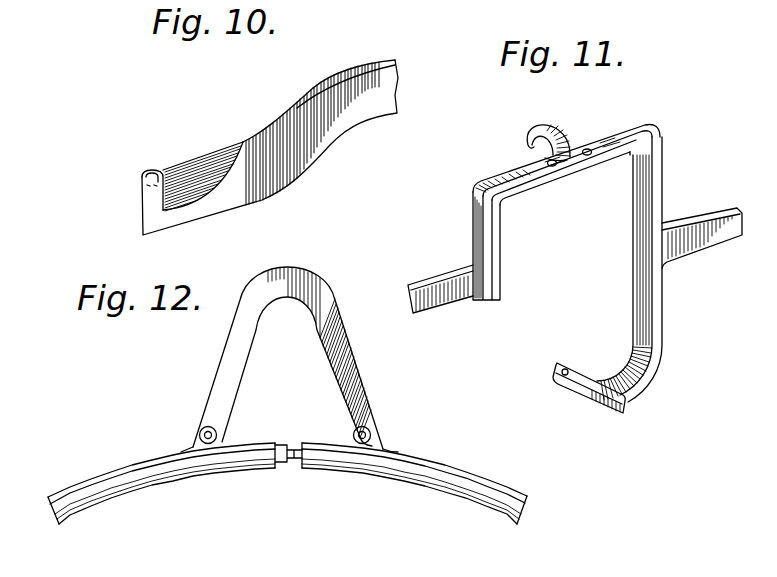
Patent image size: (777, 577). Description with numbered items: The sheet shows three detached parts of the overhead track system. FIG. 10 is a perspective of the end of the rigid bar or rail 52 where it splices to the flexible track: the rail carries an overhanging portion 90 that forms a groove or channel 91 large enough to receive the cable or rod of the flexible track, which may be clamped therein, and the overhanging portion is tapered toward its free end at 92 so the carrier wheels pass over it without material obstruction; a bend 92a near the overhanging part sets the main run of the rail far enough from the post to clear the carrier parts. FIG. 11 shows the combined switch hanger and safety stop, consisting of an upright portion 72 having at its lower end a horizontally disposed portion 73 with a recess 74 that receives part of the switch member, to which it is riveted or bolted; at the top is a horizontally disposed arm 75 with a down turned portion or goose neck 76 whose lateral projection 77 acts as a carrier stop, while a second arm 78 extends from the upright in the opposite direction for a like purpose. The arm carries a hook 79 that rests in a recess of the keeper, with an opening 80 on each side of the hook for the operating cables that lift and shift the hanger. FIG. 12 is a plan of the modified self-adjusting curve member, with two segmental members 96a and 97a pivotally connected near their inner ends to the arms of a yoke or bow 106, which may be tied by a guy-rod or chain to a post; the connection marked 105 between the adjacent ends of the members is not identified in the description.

In FIG. 10, the rigid bar or rail 52 is at (318, 85).
In FIG. 10, the overhanging portion 90 is at (190, 162).
In FIG. 10, the groove or channel 91 is at (143, 203).
In FIG. 10, the tapered end 92 is at (148, 170).
In FIG. 10, the bend 92a is at (271, 128).
In FIG. 11, the upright portion 72 is at (633, 270).
In FIG. 11, the horizontally disposed portion 73 is at (569, 369).
In FIG. 11, the recess 74 is at (577, 398).
In FIG. 11, the horizontally disposed arm 75 is at (530, 180).
In FIG. 11, the down turned portion or goose neck 76 is at (500, 268).
In FIG. 11, the lateral projection 77 is at (433, 283).
In FIG. 11, the horizontally disposed arm 78 is at (710, 221).
In FIG. 11, the hook 79 is at (560, 130).
In FIG. 11, the opening 80 is at (587, 156).
In FIG. 12, the segmental member 96a is at (130, 467).
In FIG. 12, the segmental member 97a is at (418, 458).
In FIG. 12, the connector 105 is at (283, 445).
In FIG. 12, the yoke or bow 106 is at (241, 338).